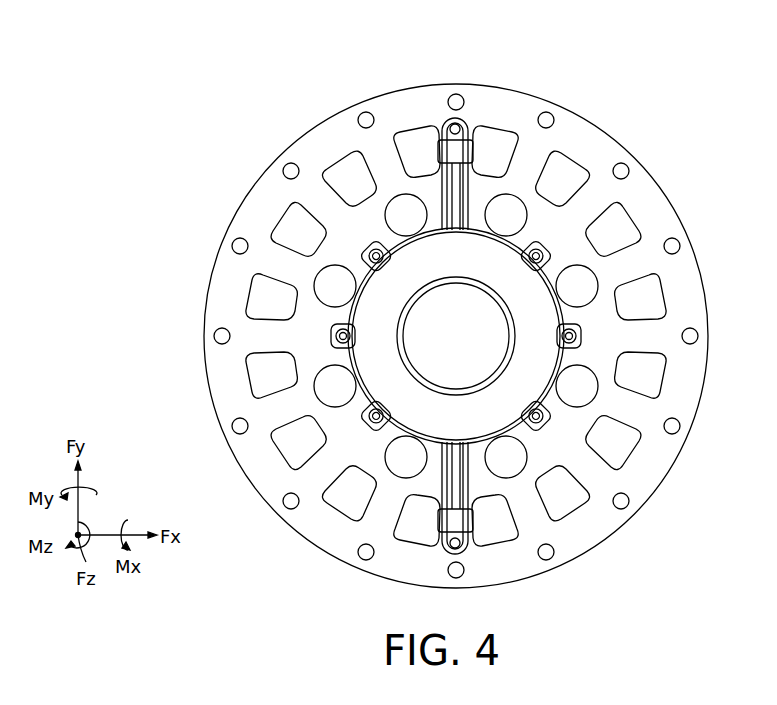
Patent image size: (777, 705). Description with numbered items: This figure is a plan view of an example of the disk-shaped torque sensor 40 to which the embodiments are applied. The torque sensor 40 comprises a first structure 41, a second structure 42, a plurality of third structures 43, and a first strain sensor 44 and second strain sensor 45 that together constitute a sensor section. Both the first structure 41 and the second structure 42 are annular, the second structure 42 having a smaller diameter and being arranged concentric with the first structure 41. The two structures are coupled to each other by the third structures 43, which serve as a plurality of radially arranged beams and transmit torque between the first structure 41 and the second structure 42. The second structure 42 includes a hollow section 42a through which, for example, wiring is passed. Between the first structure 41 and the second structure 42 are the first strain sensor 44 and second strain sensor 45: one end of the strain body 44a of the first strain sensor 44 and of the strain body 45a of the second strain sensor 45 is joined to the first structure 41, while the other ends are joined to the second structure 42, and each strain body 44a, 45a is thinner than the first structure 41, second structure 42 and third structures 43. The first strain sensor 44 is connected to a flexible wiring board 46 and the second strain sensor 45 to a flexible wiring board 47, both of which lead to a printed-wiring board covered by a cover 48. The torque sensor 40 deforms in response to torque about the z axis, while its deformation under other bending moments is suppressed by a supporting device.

The torque sensor 40 is at (484, 70).
The first structure 41 is at (262, 195).
The second structure 42 is at (308, 307).
The hollow section 42a is at (471, 339).
The third structures 43 is at (282, 407).
The first strain sensor 44 is at (432, 143).
The strain body 44a is at (473, 148).
The second strain sensor 45 is at (482, 523).
The strain body 45a is at (440, 518).
The flexible wiring board 46 is at (458, 197).
The flexible wiring board 47 is at (468, 478).
The cover 48 is at (522, 302).